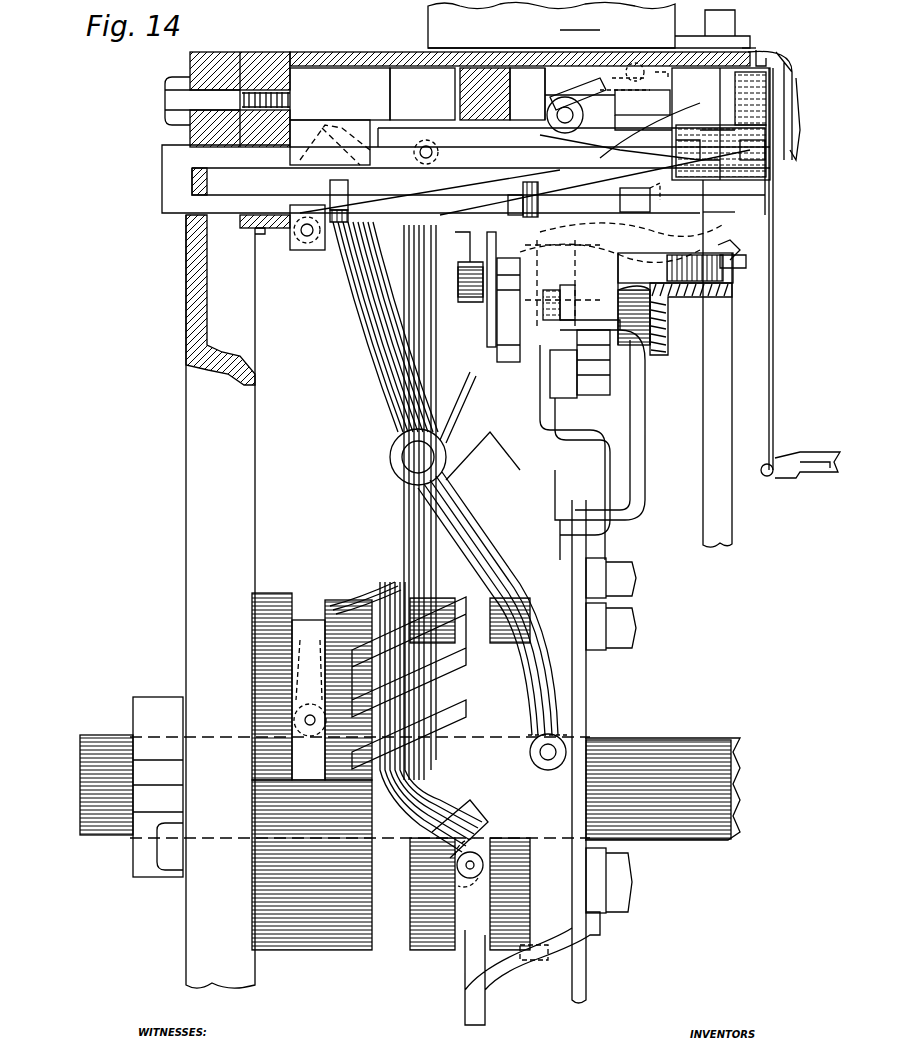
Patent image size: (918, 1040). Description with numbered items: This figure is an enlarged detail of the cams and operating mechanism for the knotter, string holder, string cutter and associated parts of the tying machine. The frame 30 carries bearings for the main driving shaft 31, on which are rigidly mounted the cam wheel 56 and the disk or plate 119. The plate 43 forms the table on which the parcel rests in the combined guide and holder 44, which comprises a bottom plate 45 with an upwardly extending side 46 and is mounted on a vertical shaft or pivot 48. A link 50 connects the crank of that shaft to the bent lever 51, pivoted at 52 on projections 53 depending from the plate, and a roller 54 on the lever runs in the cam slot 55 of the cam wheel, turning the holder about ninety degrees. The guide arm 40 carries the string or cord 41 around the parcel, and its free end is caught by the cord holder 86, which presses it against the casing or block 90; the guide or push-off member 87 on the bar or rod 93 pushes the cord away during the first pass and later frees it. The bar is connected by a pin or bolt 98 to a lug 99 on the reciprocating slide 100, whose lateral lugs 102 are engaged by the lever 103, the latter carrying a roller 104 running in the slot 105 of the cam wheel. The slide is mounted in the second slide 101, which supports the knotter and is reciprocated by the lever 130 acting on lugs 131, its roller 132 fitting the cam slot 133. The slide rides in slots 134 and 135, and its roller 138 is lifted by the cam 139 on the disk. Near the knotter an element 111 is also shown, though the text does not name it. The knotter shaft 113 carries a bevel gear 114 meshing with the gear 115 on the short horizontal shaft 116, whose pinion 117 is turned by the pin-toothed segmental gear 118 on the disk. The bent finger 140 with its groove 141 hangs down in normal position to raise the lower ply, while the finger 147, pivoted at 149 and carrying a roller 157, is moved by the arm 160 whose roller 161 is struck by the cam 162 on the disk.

The frame 30 is at (186, 535).
The main driving shaft 31 is at (738, 797).
The guide arm 40 is at (812, 478).
The string or cord 41 is at (774, 408).
The plate 43 is at (282, 52).
The combined guide and holder 44 is at (580, 22).
The bottom plate 45 is at (750, 40).
The side or abutment 46 is at (428, 33).
The vertical shaft or pivot 48 is at (756, 46).
The link 50 is at (647, 198).
The bent lever 51 is at (436, 360).
The pivot 52 is at (418, 457).
The projections 53 is at (446, 444).
The roller 54 is at (296, 722).
The cam slot 55 is at (305, 620).
The cam wheel 56 is at (312, 948).
The cord holder 86 is at (790, 108).
The guide or push-off member 87 is at (795, 68).
The casing or block 90 is at (770, 178).
The bar or rod 93 is at (770, 160).
The pin or bolt 98 is at (505, 165).
The lug or projection 99 is at (533, 218).
The reciprocating bar or slide 100 is at (605, 225).
The reciprocating member or slide 101 is at (162, 188).
The lugs or projections 102 is at (305, 230).
The lever 103 is at (362, 388).
The roller 104 is at (560, 742).
The slot 105 is at (561, 751).
The pawl 111 is at (650, 130).
The shaft 113 is at (735, 212).
The bevel gear 114 is at (736, 294).
The gear 115 is at (664, 350).
The short horizontal shaft 116 is at (562, 285).
The pinion 117 is at (510, 362).
The segmental gear 118 is at (612, 440).
The disk or plate 119 is at (586, 683).
The lever 130 is at (382, 318).
The lugs 131 is at (302, 128).
The roller 132 is at (470, 878).
The cam slot 133 is at (460, 829).
The slot 134 is at (240, 222).
The slot 135 is at (455, 116).
The roller 138 is at (552, 400).
The cam 139 is at (612, 398).
The bent arm or finger 140 is at (746, 262).
The groove 141 is at (740, 250).
The finger or lever 147 is at (770, 56).
The pivot 149 is at (636, 62).
The roller 157 is at (570, 100).
The downwardly projecting arm 160 is at (487, 325).
The roller 161 is at (462, 302).
The cam 162 is at (465, 997).